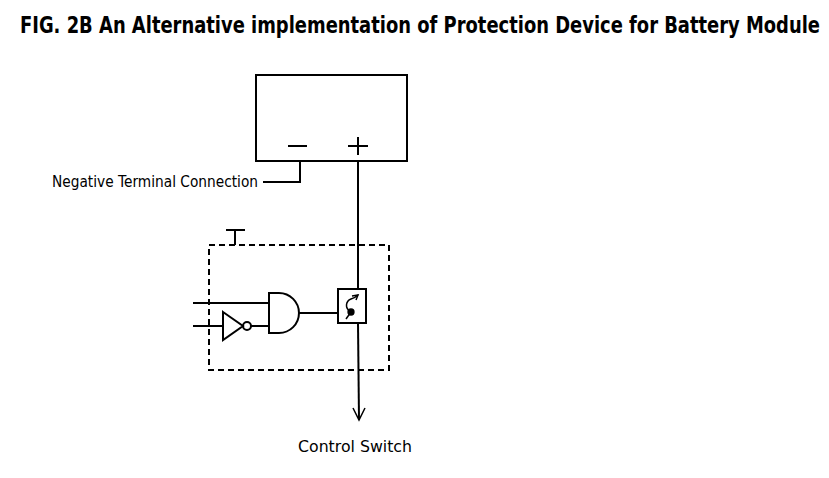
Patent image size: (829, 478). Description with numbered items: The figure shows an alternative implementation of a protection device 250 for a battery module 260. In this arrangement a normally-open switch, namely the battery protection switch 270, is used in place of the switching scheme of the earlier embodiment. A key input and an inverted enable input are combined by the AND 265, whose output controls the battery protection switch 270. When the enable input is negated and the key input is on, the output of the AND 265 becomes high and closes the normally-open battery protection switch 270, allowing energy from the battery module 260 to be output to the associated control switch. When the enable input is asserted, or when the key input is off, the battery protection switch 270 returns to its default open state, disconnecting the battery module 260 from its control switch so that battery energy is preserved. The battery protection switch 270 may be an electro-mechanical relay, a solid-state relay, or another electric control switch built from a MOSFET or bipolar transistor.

The protection device 250 is at (443, 280).
The battery module 260 is at (331, 118).
The AND 265 is at (271, 293).
The battery protection switch 270 is at (366, 303).